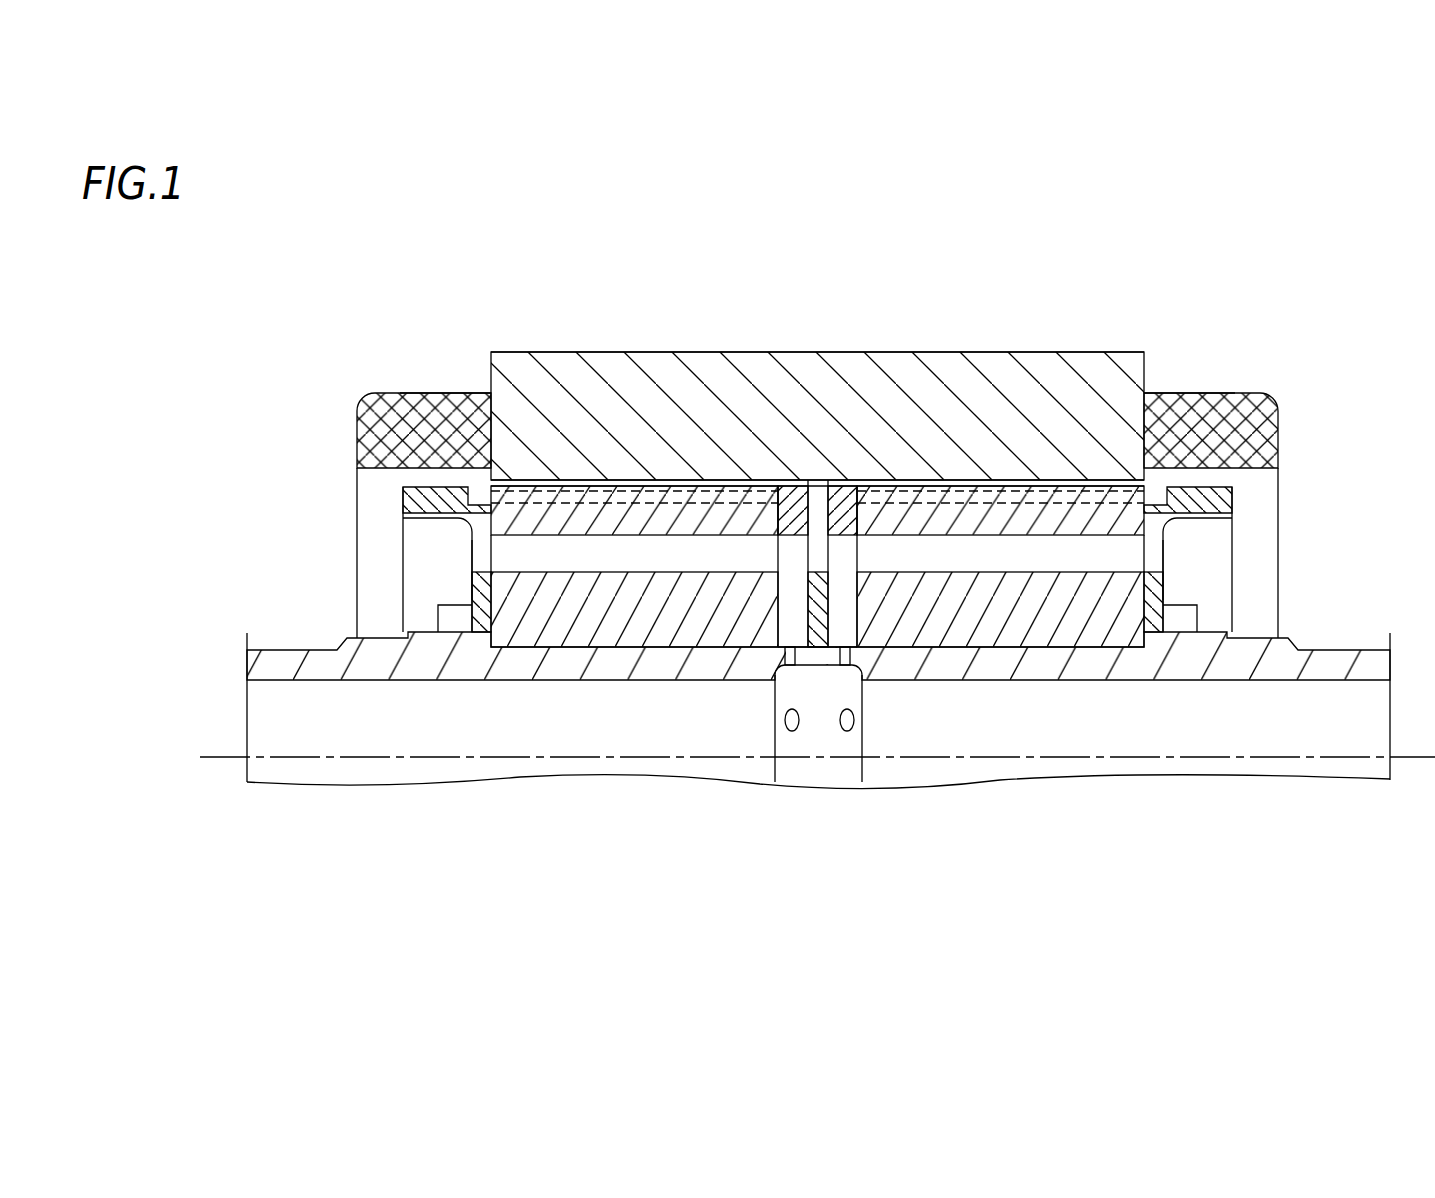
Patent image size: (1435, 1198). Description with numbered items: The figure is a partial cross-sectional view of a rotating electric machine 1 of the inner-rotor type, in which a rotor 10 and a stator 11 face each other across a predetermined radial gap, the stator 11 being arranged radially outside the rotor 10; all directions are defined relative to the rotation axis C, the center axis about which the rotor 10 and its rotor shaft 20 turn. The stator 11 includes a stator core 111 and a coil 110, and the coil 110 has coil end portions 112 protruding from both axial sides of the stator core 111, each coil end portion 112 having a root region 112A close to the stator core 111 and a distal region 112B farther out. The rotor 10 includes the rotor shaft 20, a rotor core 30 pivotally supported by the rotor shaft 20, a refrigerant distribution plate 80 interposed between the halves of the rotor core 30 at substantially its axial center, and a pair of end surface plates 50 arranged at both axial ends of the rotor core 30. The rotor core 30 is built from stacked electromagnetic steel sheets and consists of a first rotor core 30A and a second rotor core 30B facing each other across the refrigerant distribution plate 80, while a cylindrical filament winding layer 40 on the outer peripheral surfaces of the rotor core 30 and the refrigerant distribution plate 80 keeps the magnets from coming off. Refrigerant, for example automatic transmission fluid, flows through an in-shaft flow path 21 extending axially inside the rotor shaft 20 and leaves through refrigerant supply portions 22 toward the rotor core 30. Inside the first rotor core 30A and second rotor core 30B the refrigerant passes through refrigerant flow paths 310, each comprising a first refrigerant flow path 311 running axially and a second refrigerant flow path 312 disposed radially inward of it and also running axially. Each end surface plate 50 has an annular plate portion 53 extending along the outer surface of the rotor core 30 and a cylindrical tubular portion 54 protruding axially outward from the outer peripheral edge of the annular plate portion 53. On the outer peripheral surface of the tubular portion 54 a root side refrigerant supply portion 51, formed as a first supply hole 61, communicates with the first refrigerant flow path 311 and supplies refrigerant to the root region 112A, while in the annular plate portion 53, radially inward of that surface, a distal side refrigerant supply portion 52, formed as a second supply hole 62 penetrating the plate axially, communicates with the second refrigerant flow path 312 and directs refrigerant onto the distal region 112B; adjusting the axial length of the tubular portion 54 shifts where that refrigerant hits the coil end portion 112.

The rotating electric machine 1 is at (387, 222).
The rotor 10 is at (265, 620).
The stator 11 is at (435, 352).
The rotor shaft 20 is at (1337, 647).
The in-shaft flow path 21 is at (1257, 727).
The refrigerant supply portion 22 is at (781, 657).
The rotor core 30 is at (907, 978).
The first rotor core 30A is at (632, 652).
The second rotor core 30B is at (978, 652).
The filament winding layer 40 is at (1045, 480).
The end surface plate 50 is at (401, 548).
The root side refrigerant supply portion 51 is at (410, 393).
The distal side refrigerant supply portion 52 is at (430, 565).
The annular plate portion 53 is at (484, 647).
The tubular portion 54 is at (402, 505).
The first supply hole 61 is at (507, 484).
The second supply hole 62 is at (480, 562).
The refrigerant distribution plate 80 is at (821, 480).
The coil 110 is at (836, 453).
The stator core 111 is at (1027, 352).
The coil end portion 112 is at (362, 394).
The root region 112A is at (468, 392).
The distal region 112B is at (351, 473).
The refrigerant flow path 310 is at (692, 245).
The first refrigerant flow path 311 is at (668, 470).
The second refrigerant flow path 312 is at (622, 535).
The rotation axis C is at (1419, 752).